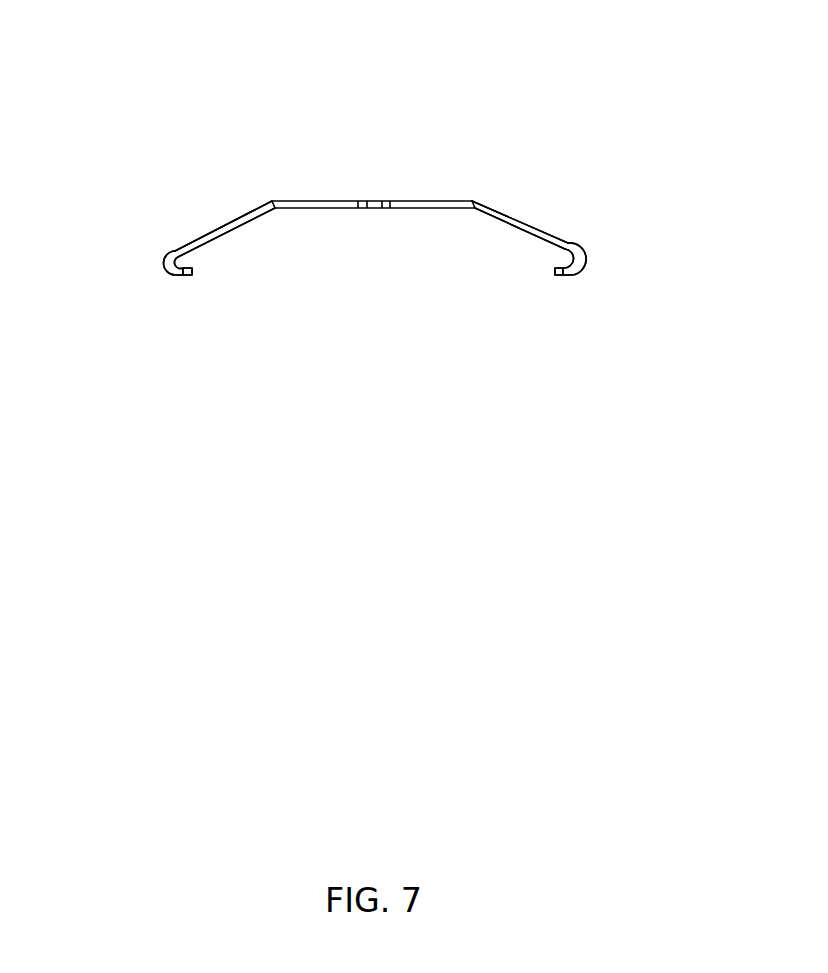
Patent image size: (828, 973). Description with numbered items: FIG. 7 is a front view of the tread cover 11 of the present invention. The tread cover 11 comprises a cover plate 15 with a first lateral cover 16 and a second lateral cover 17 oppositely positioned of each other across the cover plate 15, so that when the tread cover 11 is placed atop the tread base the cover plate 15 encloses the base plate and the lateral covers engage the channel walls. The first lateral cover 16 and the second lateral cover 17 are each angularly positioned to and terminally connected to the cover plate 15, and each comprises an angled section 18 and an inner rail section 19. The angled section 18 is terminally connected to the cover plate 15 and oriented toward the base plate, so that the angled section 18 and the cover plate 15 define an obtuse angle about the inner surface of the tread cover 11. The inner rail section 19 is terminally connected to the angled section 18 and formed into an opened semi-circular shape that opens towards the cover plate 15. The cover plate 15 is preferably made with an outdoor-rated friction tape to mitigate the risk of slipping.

The tread cover 11 is at (266, 95).
The cover plate 15 is at (343, 205).
The first lateral cover 16 is at (518, 220).
The second lateral cover 17 is at (247, 214).
The angled section 18 is at (383, 209).
The inner rail section 19 is at (391, 272).